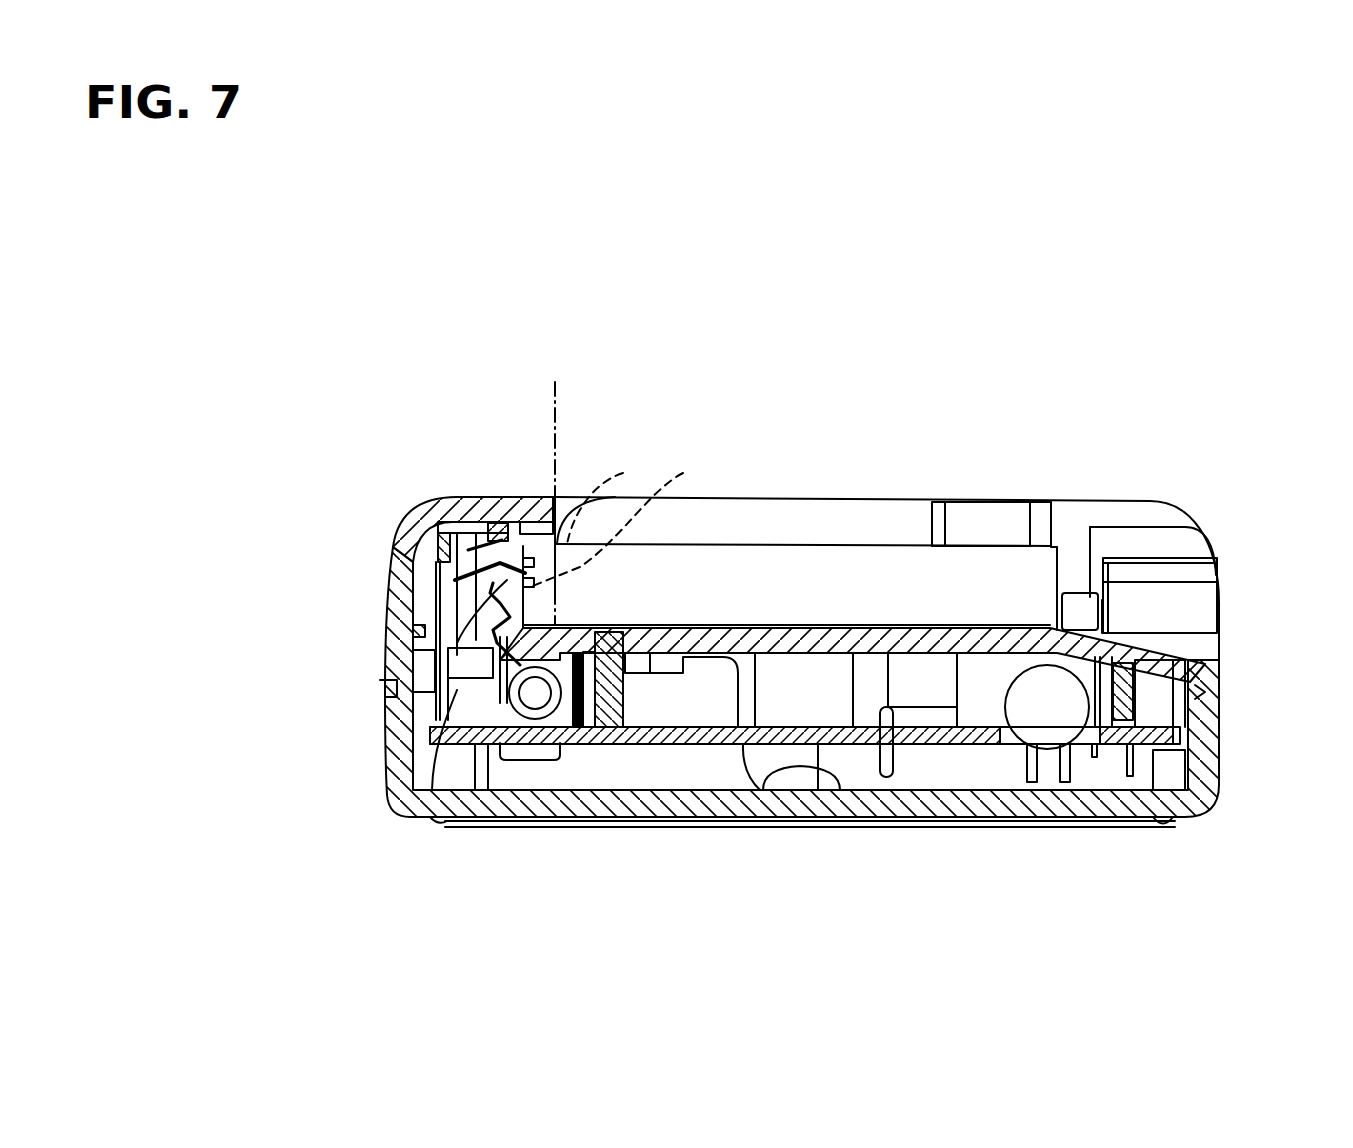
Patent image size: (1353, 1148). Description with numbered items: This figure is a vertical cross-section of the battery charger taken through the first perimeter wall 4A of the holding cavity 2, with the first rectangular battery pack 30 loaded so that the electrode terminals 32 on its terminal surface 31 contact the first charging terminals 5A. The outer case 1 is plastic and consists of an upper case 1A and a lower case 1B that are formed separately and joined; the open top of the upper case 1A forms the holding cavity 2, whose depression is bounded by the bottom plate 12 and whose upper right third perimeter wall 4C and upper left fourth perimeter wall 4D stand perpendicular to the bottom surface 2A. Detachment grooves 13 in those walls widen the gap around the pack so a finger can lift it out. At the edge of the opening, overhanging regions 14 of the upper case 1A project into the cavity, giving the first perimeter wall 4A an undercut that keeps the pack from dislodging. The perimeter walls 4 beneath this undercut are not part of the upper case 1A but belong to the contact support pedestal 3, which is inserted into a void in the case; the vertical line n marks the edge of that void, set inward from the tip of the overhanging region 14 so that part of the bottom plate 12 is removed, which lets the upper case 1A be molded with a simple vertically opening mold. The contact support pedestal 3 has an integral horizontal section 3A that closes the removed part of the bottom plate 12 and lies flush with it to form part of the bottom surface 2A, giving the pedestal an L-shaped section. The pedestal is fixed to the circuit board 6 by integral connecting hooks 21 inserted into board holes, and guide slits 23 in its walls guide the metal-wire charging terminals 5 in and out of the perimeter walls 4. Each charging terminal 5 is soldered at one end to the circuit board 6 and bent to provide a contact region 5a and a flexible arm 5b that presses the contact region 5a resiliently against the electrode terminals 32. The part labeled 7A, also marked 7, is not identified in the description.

The outer case 1 is at (168, 463).
The upper case 1A is at (423, 530).
The lower case 1B is at (397, 757).
The holding cavity 2 is at (1003, 515).
The bottom surface 2A is at (768, 624).
The contact support pedestal 3 is at (417, 807).
The horizontal section 3A is at (590, 745).
The perimeter walls 4 is at (1107, 266).
The first perimeter wall 4A is at (522, 497).
The third perimeter wall 4C is at (1096, 593).
The fourth perimeter wall 4D is at (968, 500).
The charging terminals 5 is at (404, 602).
The first charging terminals 5A is at (490, 593).
The contact region 5a is at (631, 514).
The flexible arm 5b is at (497, 650).
The circuit board 6 is at (768, 762).
The pivot member 7 is at (656, 441).
The pivot arc portion 7A is at (560, 497).
The bottom plate 12 is at (840, 630).
The detachment grooves 13 is at (793, 518).
The overhanging regions 14 is at (548, 497).
The connecting hooks 21 is at (615, 745).
The guide slits 23 is at (436, 500).
The first rectangular battery pack 30 is at (826, 545).
The terminal surface 31 is at (417, 712).
The electrode terminals 32 is at (623, 480).
The vertical line n is at (560, 407).